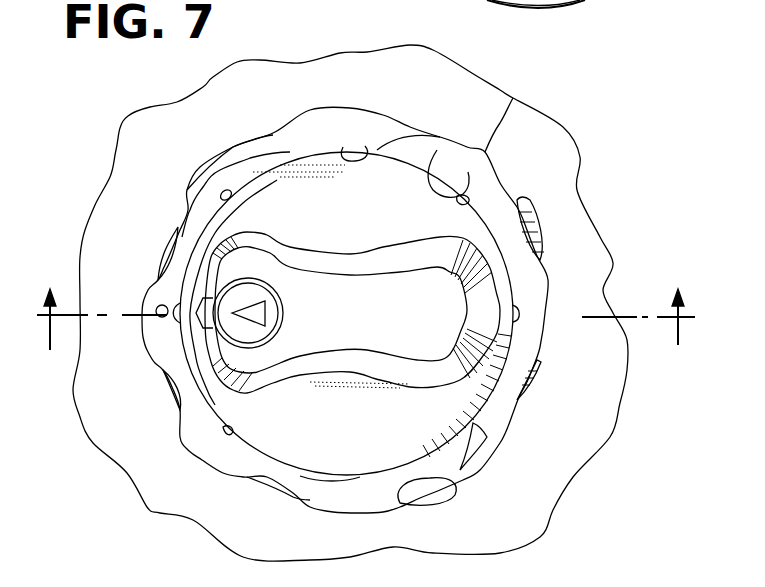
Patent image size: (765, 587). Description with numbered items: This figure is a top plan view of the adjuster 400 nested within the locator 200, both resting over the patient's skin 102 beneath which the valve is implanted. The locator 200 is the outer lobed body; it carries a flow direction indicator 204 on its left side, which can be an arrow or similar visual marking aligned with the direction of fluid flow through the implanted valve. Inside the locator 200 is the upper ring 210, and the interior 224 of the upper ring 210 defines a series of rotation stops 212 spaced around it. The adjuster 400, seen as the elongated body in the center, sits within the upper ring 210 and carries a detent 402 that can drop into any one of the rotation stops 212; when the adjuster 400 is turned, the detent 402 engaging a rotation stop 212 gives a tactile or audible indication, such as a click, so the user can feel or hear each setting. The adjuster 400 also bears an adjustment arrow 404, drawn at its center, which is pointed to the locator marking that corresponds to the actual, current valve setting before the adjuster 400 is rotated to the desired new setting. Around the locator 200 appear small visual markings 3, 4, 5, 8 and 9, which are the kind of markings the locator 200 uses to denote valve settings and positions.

The patient's skin 102 is at (577, 187).
The locator 200 is at (513, 98).
The flow direction indicator 204 is at (158, 308).
The upper ring 210 is at (515, 412).
The rotation stops 212 is at (437, 150).
The interior 224 is at (213, 227).
The adjuster 400 is at (242, 227).
The detent 402 is at (337, 478).
The adjustment arrow 404 is at (262, 313).
The position marker 3 is at (209, 187).
The position marker 4 is at (344, 129).
The position marker 5 is at (471, 184).
The section line 8-8 / position marker 8 is at (366, 401).
The position marker 9 is at (521, 315).